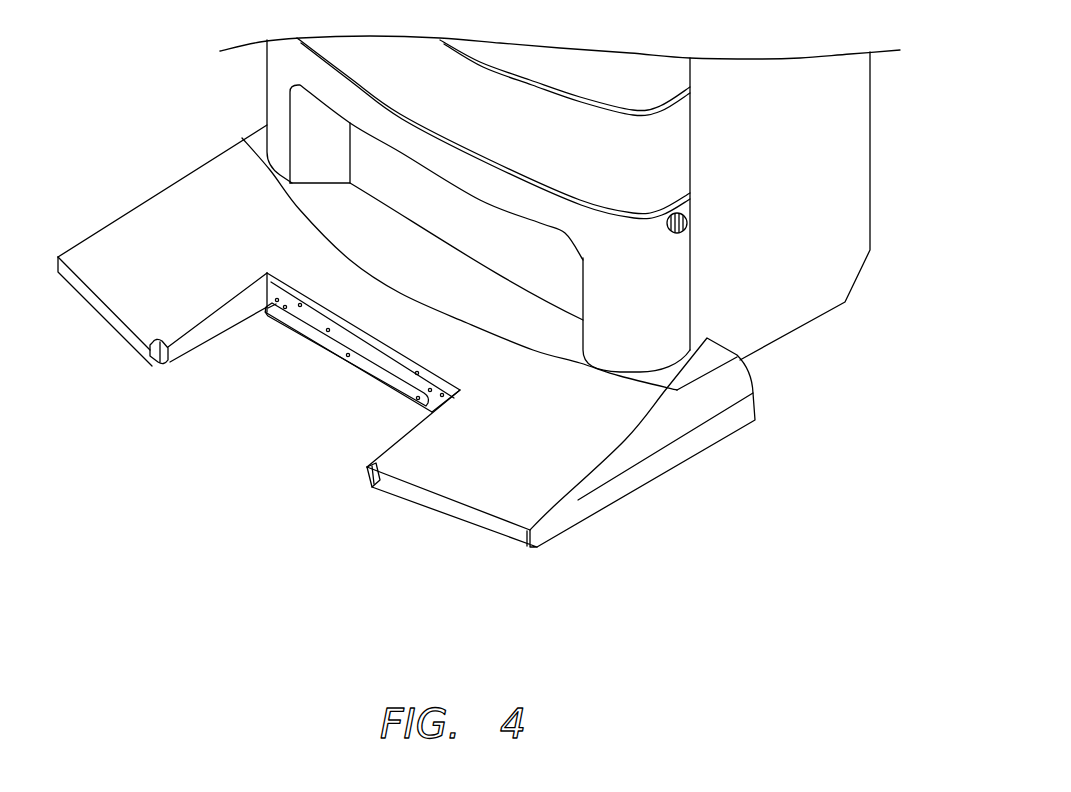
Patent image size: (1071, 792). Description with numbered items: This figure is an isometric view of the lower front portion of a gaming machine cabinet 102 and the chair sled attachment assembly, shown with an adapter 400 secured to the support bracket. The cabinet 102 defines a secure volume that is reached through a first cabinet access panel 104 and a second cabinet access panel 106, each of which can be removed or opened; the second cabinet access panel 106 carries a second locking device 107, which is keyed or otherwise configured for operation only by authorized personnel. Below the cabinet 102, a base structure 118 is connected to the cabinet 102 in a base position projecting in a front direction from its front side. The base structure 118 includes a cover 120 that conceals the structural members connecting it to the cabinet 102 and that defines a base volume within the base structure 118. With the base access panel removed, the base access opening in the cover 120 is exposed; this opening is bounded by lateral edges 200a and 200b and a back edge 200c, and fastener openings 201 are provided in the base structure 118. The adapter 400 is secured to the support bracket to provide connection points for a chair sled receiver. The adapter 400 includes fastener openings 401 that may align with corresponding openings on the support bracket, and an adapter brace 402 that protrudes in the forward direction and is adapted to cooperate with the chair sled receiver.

The cabinet 102 is at (853, 118).
The first cabinet access panel 104 is at (653, 148).
The second cabinet access panel 106 is at (653, 284).
The second locking device 107 is at (692, 224).
The base structure 118 is at (121, 175).
The cover 120 is at (563, 457).
The lateral edge 200a is at (217, 313).
The lateral edge 200b is at (414, 430).
The back edge 200c is at (376, 335).
The fastener openings 201 is at (158, 366).
The adapter 400 is at (313, 321).
The fastener openings 401 is at (430, 390).
The adapter brace 402 is at (282, 330).